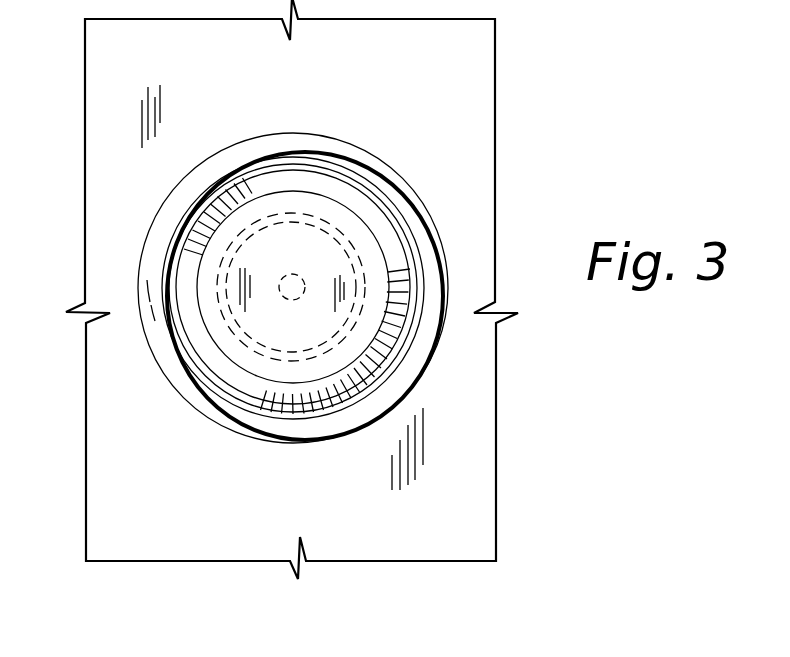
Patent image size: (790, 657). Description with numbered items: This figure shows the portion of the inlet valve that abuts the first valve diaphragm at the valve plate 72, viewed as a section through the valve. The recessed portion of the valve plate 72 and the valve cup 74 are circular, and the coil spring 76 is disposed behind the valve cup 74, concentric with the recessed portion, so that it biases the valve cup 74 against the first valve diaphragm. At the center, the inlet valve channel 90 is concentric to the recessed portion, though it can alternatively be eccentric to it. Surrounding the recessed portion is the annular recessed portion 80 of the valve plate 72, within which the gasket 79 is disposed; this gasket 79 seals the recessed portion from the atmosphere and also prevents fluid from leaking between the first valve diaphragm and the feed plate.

The valve plate 72 is at (262, 505).
The valve cup 74 is at (304, 204).
The coil spring 76 is at (245, 349).
The gasket 79 is at (209, 167).
The annular recessed portion 80 is at (168, 191).
The inlet valve channel 90 is at (297, 276).